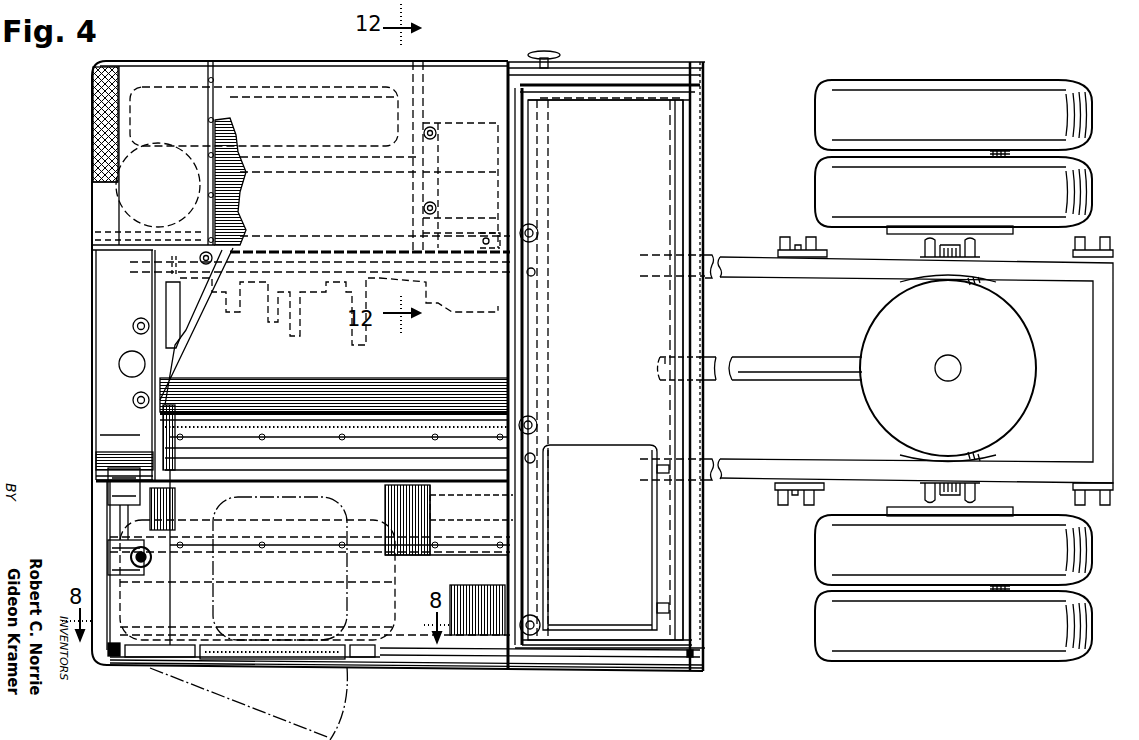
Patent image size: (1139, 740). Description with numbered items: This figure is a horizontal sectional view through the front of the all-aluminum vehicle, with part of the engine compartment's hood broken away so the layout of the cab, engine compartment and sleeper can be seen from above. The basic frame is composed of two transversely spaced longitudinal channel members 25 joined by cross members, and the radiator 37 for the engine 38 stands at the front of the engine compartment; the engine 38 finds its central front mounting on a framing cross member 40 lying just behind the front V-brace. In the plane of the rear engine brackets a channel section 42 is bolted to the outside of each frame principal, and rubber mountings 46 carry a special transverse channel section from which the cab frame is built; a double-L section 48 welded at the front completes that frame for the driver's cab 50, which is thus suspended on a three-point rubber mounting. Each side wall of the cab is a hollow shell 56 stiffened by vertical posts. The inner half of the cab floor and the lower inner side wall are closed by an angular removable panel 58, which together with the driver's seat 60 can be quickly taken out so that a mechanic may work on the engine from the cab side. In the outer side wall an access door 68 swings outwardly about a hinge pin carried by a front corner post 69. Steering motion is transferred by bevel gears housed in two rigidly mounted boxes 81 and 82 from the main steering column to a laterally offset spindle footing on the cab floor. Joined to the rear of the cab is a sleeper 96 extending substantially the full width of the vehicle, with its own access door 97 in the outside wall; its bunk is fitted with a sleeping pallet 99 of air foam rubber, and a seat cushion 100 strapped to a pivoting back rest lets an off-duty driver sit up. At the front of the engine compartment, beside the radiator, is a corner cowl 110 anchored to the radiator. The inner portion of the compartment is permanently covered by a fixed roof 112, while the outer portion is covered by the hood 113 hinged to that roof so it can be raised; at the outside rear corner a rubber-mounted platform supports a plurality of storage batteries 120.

The longitudinal channel members 25 is at (757, 265).
The radiator 37 is at (100, 290).
The engine 38 is at (462, 298).
The framing cross member 40 is at (212, 289).
The channel section 42 is at (484, 240).
The rubber mountings 46 is at (539, 232).
The double-L section 48 is at (458, 632).
The driver's cab 50 is at (398, 663).
The hollow shell 56 is at (453, 414).
The removable panel 58 is at (457, 520).
The driver's seat 60 is at (222, 497).
The access door 68 is at (286, 660).
The front corner post 69 is at (112, 660).
The gear box 81 is at (118, 557).
The gear box 82 is at (110, 495).
The sleeper 96 is at (713, 154).
The access door 97 is at (626, 70).
The sleeping pallet 99 is at (668, 203).
The seat cushion 100 is at (608, 442).
The corner cowl 110 is at (146, 76).
The fixed roof 112 is at (212, 301).
The hood 113 is at (300, 74).
The storage batteries 120 is at (471, 215).